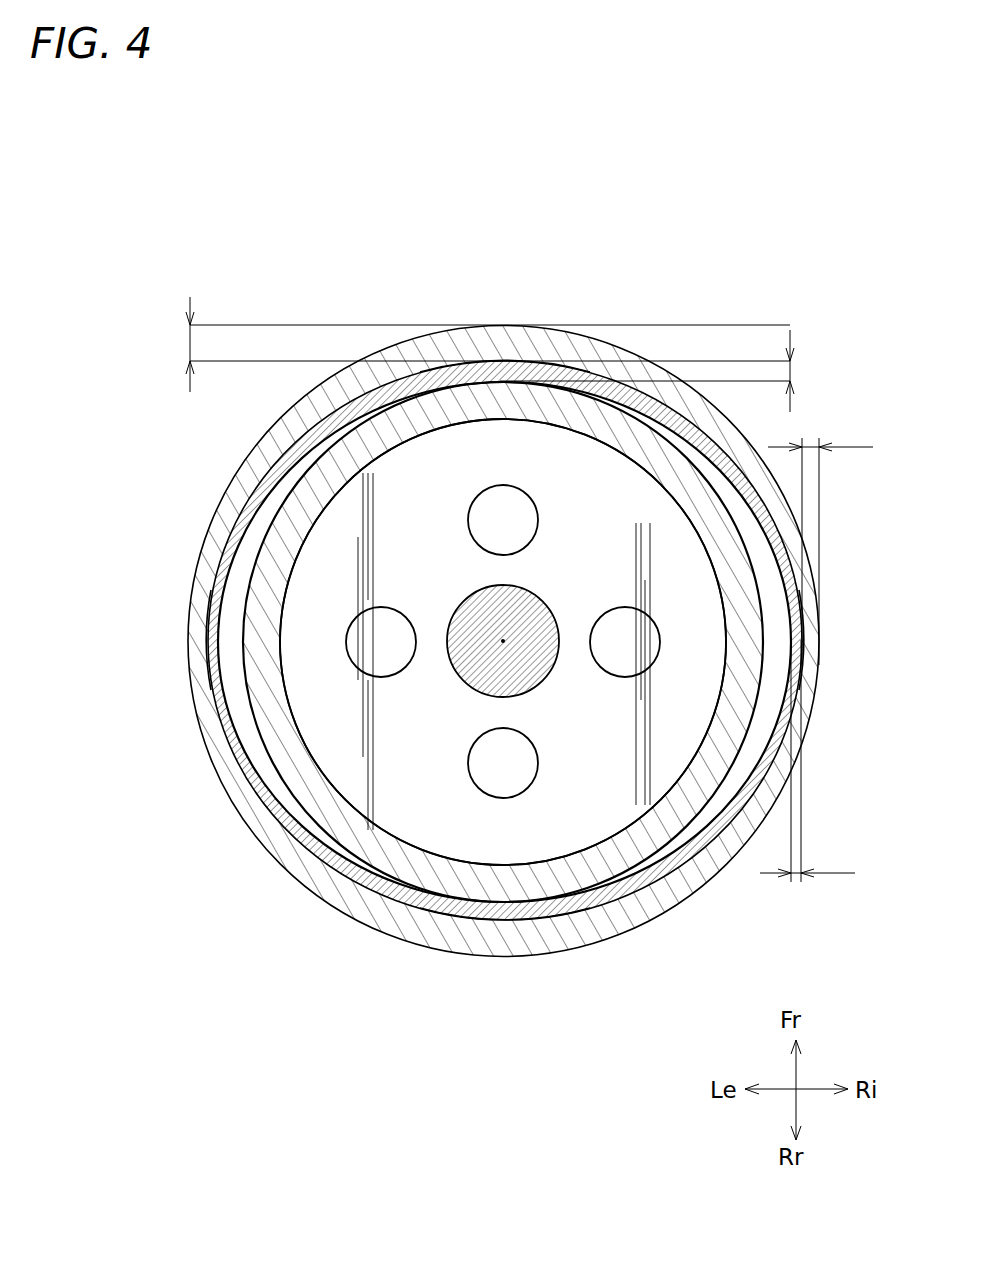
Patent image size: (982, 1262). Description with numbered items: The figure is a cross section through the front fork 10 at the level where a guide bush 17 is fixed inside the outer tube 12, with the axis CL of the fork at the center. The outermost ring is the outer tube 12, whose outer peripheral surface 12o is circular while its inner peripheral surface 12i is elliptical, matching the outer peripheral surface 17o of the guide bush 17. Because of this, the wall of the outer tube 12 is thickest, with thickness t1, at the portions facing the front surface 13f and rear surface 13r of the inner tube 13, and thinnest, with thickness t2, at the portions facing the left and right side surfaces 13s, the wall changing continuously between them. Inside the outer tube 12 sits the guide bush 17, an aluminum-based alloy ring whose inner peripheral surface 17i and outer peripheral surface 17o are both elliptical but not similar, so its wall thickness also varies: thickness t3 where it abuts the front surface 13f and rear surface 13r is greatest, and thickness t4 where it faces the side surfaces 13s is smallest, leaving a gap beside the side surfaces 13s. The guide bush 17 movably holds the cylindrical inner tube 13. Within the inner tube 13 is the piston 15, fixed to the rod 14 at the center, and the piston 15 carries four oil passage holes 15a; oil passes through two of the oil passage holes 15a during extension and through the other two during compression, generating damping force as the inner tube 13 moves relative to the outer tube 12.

The front fork 10 is at (246, 222).
The outer tube 12 is at (503, 604).
The outer peripheral surface 12o is at (543, 327).
The inner peripheral surface 12i is at (455, 366).
The inner tube 13 is at (722, 862).
The front surface 13f is at (493, 376).
The rear surface 13r is at (498, 912).
The side surfaces 13s is at (243, 633).
The rod 14 is at (455, 682).
The piston 15 is at (428, 819).
The oil passage holes 15a is at (503, 490).
The guide bush 17 is at (457, 655).
The outer peripheral surface 17o is at (308, 848).
The inner peripheral surface 17i is at (262, 746).
The axis CL is at (503, 641).
The thickness t1 is at (476, 344).
The thickness t2 is at (820, 543).
The thickness t3 is at (662, 371).
The thickness t4 is at (807, 761).